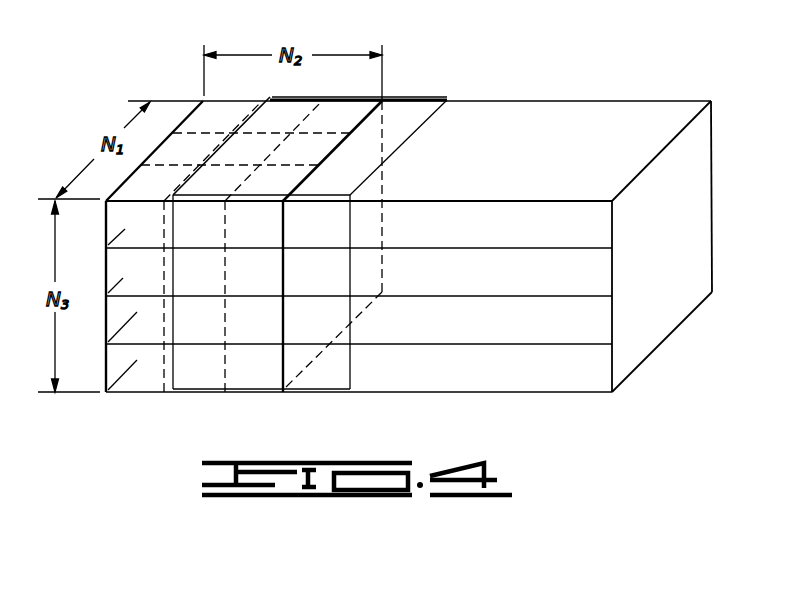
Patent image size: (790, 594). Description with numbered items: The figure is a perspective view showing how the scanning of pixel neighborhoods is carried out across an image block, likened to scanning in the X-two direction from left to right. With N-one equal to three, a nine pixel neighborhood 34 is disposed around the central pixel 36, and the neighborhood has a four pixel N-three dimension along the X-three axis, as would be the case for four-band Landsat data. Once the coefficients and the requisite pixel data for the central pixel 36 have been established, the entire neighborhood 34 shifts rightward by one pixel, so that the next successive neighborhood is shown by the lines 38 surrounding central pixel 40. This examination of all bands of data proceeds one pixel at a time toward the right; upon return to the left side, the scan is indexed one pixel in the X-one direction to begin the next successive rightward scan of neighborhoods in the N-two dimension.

The pixel neighborhood 34 is at (366, 117).
The central pixel 36 is at (256, 160).
The lines 38 is at (413, 135).
The central pixel 40 is at (314, 160).